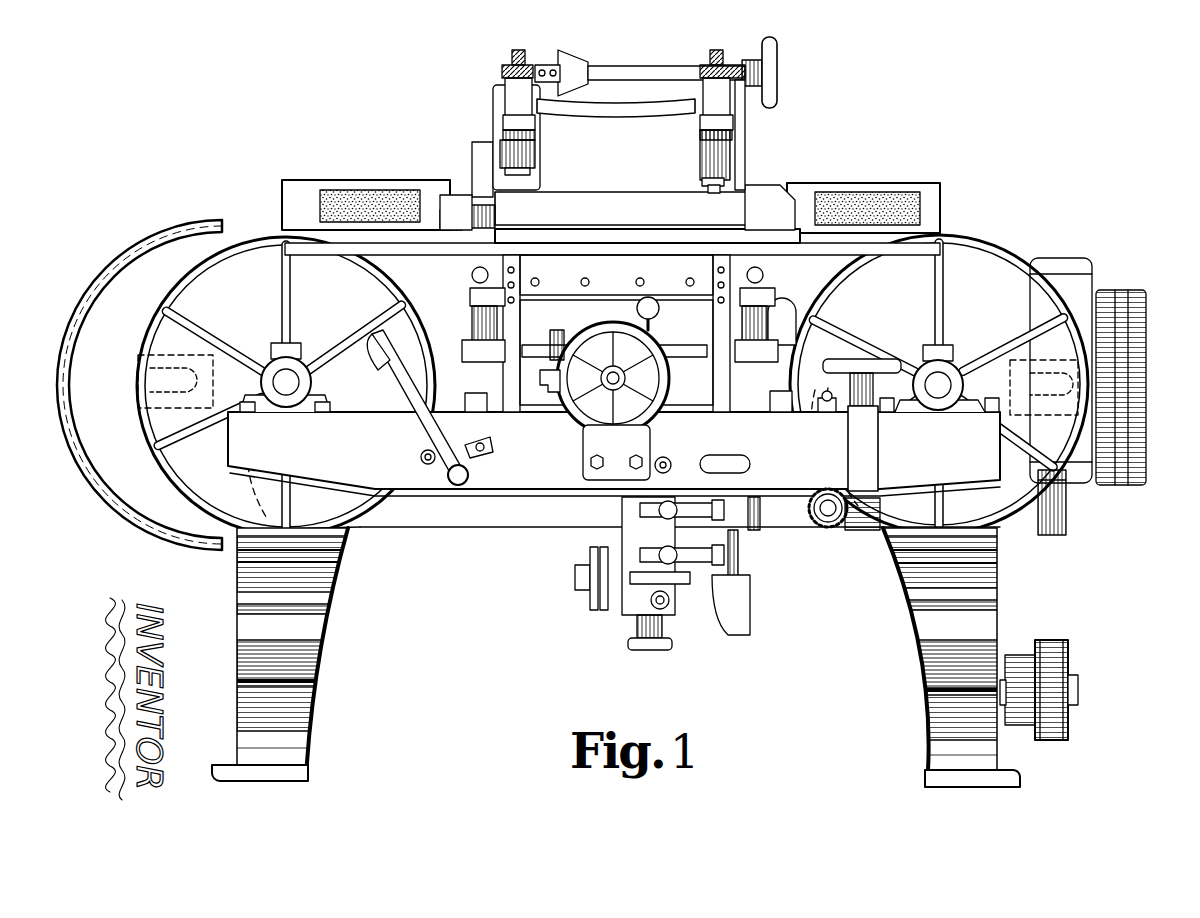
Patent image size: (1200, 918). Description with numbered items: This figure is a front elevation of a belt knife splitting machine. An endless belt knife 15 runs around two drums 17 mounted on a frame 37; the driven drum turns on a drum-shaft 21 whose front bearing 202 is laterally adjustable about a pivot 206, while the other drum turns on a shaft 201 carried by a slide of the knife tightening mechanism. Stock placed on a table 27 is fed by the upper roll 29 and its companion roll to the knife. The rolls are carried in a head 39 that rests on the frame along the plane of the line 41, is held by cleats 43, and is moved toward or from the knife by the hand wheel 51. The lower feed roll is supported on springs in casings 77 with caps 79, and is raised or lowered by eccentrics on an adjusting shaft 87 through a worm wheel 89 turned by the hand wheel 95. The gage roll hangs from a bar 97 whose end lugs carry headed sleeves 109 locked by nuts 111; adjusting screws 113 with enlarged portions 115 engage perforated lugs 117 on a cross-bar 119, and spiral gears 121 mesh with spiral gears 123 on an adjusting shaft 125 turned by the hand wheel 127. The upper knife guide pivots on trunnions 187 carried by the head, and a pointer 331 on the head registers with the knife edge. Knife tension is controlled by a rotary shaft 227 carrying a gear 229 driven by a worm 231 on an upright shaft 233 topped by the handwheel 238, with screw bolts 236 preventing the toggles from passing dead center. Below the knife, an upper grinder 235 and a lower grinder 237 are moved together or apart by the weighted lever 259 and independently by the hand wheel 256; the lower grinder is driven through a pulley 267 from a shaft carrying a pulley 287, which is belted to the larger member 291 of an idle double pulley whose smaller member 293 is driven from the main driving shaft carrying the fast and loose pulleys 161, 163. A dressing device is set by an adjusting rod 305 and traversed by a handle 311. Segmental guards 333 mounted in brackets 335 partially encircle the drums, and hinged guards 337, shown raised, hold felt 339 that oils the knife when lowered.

The belt knife 15 is at (396, 528).
The drums 17 is at (273, 260).
The drum-shaft 21 is at (285, 380).
The table 27 is at (922, 245).
The upper roll 29 is at (560, 230).
The frame 37 is at (255, 583).
The head 39 is at (498, 134).
The line 41 is at (513, 420).
The cleats 43 is at (474, 405).
The hand wheel 51 is at (648, 340).
The casings 77 is at (795, 320).
The caps 79 is at (471, 290).
The adjusting shaft 87 is at (697, 358).
The worm wheel 89 is at (556, 332).
The hand wheel 95 is at (546, 372).
The bar 97 is at (705, 160).
The headed sleeves 109 is at (742, 143).
The nuts 111 is at (707, 170).
The adjusting screws 113 is at (742, 133).
The enlarged portions 115 is at (505, 117).
The perforated lugs 117 is at (512, 93).
The cross-bar 119 is at (585, 106).
The spiral gears 121 is at (510, 66).
The spiral gears 123 is at (519, 50).
The adjusting shaft 125 is at (618, 66).
The hand wheel 127 is at (770, 58).
The fast pulley 161 is at (1128, 292).
The loose pulley 163 is at (1075, 283).
The trunnions 187 is at (445, 205).
The shaft 201 is at (940, 385).
The bearing 202 is at (295, 405).
The pivot 206 is at (992, 402).
The rotary shaft 227 is at (820, 530).
The gear 229 is at (829, 522).
The worm 231 is at (860, 532).
The upright shaft 233 is at (827, 414).
The upper grinder 235 is at (761, 511).
The screw bolts 236 is at (780, 413).
The lower grinder 237 is at (740, 540).
The handwheel 238 is at (862, 365).
The hand wheel 256 is at (650, 650).
The weighted lever 259 is at (660, 307).
The pulley 267 is at (592, 600).
The pulley 287 is at (1060, 500).
The larger member 291 is at (1055, 660).
The smaller member 293 is at (1016, 670).
The adjusting rod 305 is at (670, 460).
The handle 311 is at (660, 510).
The pointer 331 is at (446, 208).
The segmental guards 333 is at (182, 228).
The brackets 335 is at (168, 370).
The guards 337 is at (307, 197).
The felt 339 is at (365, 200).